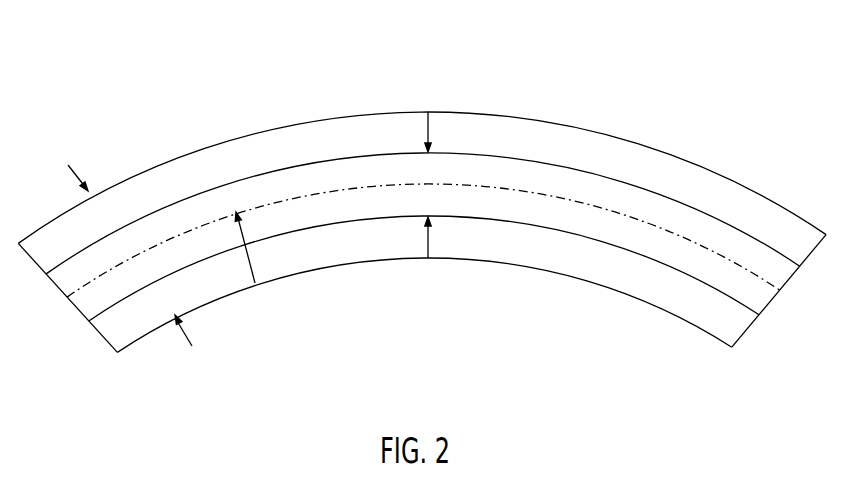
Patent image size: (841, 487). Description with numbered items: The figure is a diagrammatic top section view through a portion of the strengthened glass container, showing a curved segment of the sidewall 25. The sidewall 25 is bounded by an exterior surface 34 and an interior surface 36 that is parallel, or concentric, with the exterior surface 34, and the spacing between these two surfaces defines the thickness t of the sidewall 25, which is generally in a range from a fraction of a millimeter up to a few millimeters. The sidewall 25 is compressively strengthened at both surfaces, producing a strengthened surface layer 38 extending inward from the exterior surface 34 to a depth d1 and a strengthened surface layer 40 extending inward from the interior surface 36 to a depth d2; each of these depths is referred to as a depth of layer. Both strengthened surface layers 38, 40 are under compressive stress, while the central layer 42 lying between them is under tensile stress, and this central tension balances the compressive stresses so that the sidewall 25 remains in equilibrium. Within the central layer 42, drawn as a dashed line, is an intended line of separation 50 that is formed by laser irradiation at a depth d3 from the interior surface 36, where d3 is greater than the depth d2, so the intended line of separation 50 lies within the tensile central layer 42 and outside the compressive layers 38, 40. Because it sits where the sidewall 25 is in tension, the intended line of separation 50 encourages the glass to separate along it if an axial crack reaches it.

The sidewall 25 is at (300, 108).
The exterior surface 34 is at (622, 132).
The interior surface 36 is at (552, 272).
The strengthened surface layer 38 is at (712, 205).
The strengthened surface layer 40 is at (673, 302).
The central layer 42 is at (782, 275).
The intended line of separation 50 is at (200, 220).
The depth of layer d1 is at (430, 124).
The depth of layer d2 is at (427, 243).
The depth of intended line of separation d3 is at (255, 283).
The thickness t is at (192, 346).